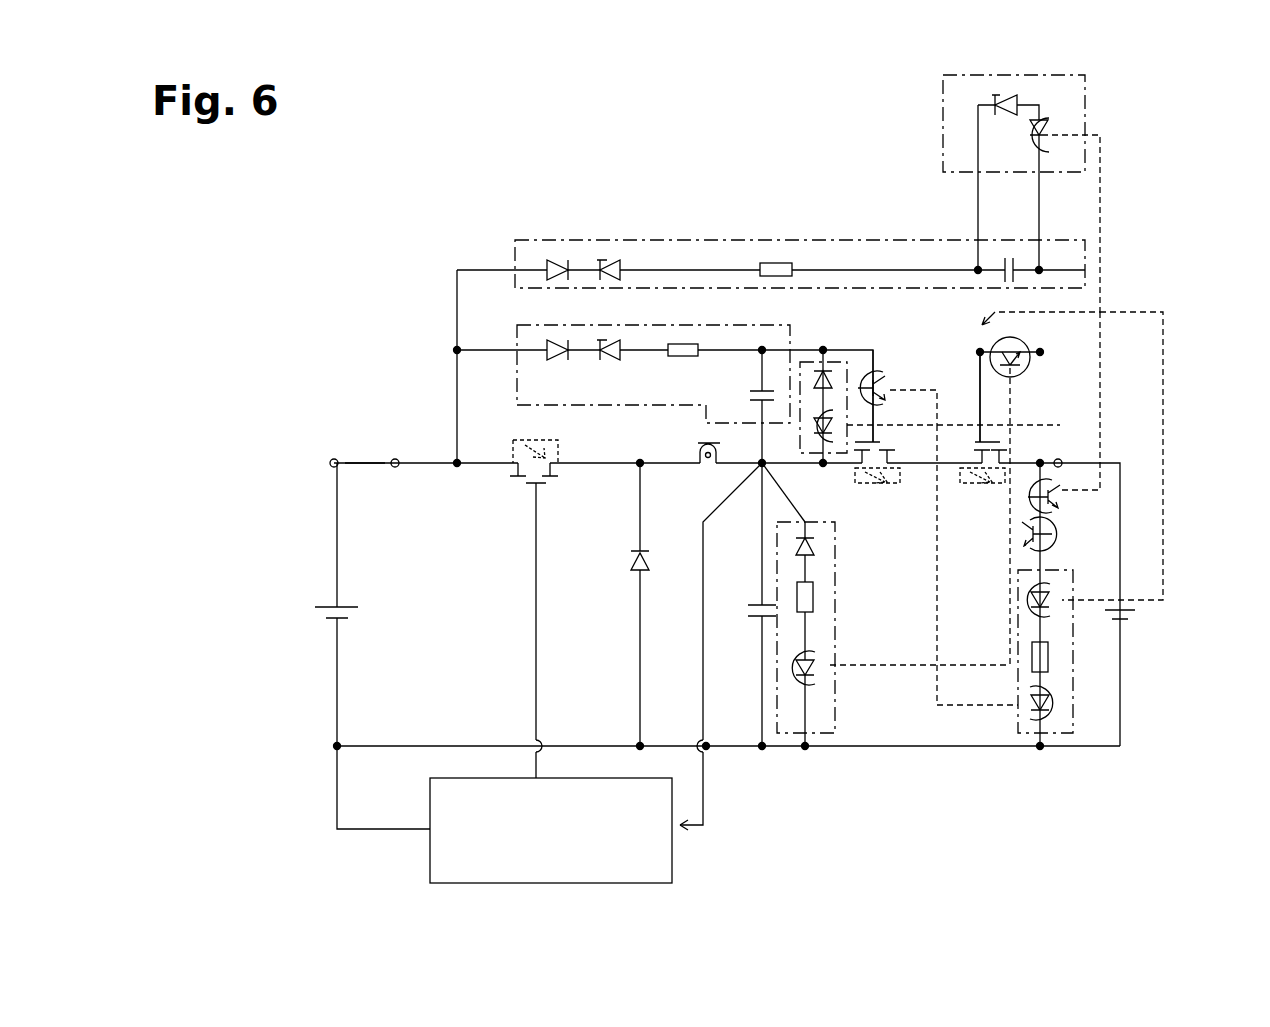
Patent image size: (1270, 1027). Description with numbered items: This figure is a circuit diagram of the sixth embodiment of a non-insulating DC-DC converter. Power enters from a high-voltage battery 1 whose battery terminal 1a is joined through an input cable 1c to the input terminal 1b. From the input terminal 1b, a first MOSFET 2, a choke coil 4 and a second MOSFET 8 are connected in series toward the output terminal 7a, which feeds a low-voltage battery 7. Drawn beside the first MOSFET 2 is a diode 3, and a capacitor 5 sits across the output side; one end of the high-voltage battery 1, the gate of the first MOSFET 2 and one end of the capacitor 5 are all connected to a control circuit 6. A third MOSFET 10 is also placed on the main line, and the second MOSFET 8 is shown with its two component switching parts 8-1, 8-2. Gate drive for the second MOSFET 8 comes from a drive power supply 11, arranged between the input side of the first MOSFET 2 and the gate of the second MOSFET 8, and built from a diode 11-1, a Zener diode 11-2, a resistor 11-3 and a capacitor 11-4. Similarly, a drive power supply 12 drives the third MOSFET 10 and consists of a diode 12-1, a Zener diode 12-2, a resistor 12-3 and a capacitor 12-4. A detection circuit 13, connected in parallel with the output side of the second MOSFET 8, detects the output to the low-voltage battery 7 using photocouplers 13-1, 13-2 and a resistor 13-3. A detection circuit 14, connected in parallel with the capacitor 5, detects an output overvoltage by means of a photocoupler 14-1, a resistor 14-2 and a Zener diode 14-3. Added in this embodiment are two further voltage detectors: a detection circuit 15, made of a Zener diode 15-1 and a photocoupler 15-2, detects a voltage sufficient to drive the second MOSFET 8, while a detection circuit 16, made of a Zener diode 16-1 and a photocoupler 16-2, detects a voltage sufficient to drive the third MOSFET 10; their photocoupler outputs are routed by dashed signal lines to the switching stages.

The high-voltage battery 1 is at (330, 606).
The battery terminal 1a is at (332, 459).
The input terminal 1b is at (396, 459).
The input cable 1c is at (368, 461).
The first MOSFET 2 is at (556, 480).
The diode 3 is at (628, 560).
The choke coil 4 is at (704, 476).
The capacitor 5 is at (758, 618).
The control circuit 6 is at (672, 850).
The low-voltage battery 7 is at (1140, 618).
The output terminal 7a is at (1060, 460).
The second MOSFET 8 is at (1002, 442).
The switching transistor 8-1 is at (987, 486).
The switching transistor 8-2 is at (878, 486).
The third MOSFET 10 is at (895, 442).
The drive power supply 11 is at (862, 240).
The diode 11-1 is at (560, 260).
The Zener diode 11-2 is at (608, 260).
The resistor 11-3 is at (777, 262).
The capacitor 11-4 is at (1010, 258).
The drive power supply 12 is at (795, 325).
The diode 12-1 is at (556, 344).
The Zener diode 12-2 is at (605, 360).
The resistor 12-3 is at (690, 344).
The capacitor 12-4 is at (750, 392).
The detection circuit 13 is at (1065, 733).
The photocoupler 13-1 is at (1020, 612).
The photocoupler 13-2 is at (1022, 712).
The resistor 13-3 is at (1028, 670).
The detection circuit 14 is at (820, 733).
The photocoupler 14-1 is at (835, 662).
The resistor 14-2 is at (814, 596).
The Zener diode 14-3 is at (815, 550).
The detection circuit 15 is at (1065, 75).
The Zener diode 15-1 is at (1000, 100).
The photocoupler 15-2 is at (1057, 128).
The detection circuit 16 is at (828, 362).
The Zener diode 16-1 is at (838, 380).
The photocoupler 16-2 is at (818, 476).